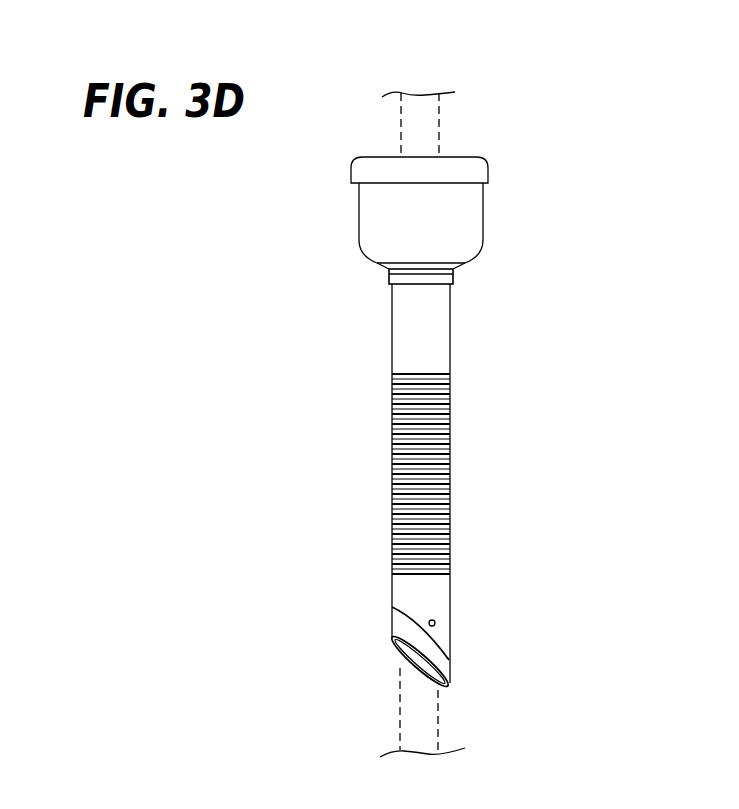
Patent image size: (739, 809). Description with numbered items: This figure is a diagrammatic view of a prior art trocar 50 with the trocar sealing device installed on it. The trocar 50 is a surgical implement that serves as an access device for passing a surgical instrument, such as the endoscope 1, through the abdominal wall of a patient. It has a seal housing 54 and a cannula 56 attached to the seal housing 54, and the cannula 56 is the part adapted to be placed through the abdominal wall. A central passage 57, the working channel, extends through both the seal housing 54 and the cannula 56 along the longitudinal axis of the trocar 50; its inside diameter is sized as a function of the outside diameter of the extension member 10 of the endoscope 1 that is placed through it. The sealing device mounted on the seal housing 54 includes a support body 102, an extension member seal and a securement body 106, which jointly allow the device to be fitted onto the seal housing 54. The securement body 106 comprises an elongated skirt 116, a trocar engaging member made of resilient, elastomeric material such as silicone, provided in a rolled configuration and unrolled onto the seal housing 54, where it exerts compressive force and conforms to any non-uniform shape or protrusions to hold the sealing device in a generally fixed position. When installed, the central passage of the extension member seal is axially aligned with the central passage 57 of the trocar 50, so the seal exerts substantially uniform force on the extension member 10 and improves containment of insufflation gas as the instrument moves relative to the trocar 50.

The endoscope 1 is at (440, 116).
The extension member 10 is at (425, 137).
The trocar 50 is at (394, 350).
The seal housing 54 is at (440, 268).
The cannula 56 is at (438, 345).
The central passage 57 is at (410, 660).
The support body 102 is at (479, 162).
The securement body 106 is at (472, 198).
The elongated skirt 116 is at (468, 228).